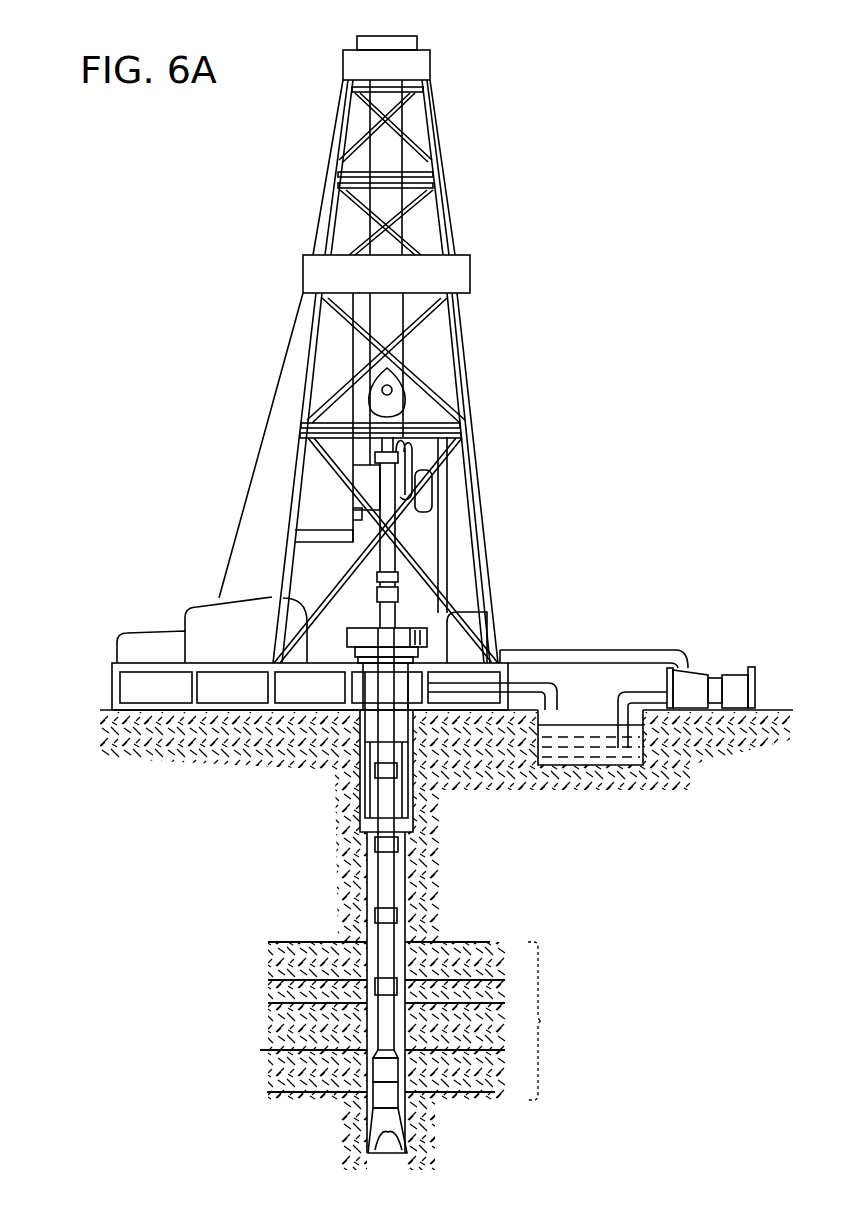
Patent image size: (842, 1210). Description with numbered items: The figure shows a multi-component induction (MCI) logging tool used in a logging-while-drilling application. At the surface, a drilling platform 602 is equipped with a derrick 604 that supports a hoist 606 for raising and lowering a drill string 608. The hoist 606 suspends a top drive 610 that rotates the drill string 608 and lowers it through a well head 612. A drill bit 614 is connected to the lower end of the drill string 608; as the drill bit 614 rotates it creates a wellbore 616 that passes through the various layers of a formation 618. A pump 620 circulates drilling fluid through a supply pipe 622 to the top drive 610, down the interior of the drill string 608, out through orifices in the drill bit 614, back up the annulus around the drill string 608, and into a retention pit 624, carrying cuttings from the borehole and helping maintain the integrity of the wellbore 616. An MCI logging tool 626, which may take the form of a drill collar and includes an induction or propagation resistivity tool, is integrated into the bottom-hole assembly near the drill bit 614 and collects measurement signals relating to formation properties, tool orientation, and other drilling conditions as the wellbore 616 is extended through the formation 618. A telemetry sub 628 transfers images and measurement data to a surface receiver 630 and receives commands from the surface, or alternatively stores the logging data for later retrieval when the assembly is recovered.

The drilling platform 602 is at (112, 688).
The derrick 604 is at (456, 213).
The hoist 606 is at (393, 390).
The drill string 608 is at (395, 890).
The top drive 610 is at (388, 481).
The well head 612 is at (403, 627).
The drill bit 614 is at (408, 1137).
The wellbore 616 is at (405, 903).
The formation 618 is at (428, 1021).
The pump 620 is at (690, 688).
The supply pipe 622 is at (603, 650).
The retention pit 624 is at (558, 752).
The MCI logging tool 626 is at (372, 1097).
The telemetry sub 628 is at (373, 1075).
The surface receiver 630 is at (398, 577).